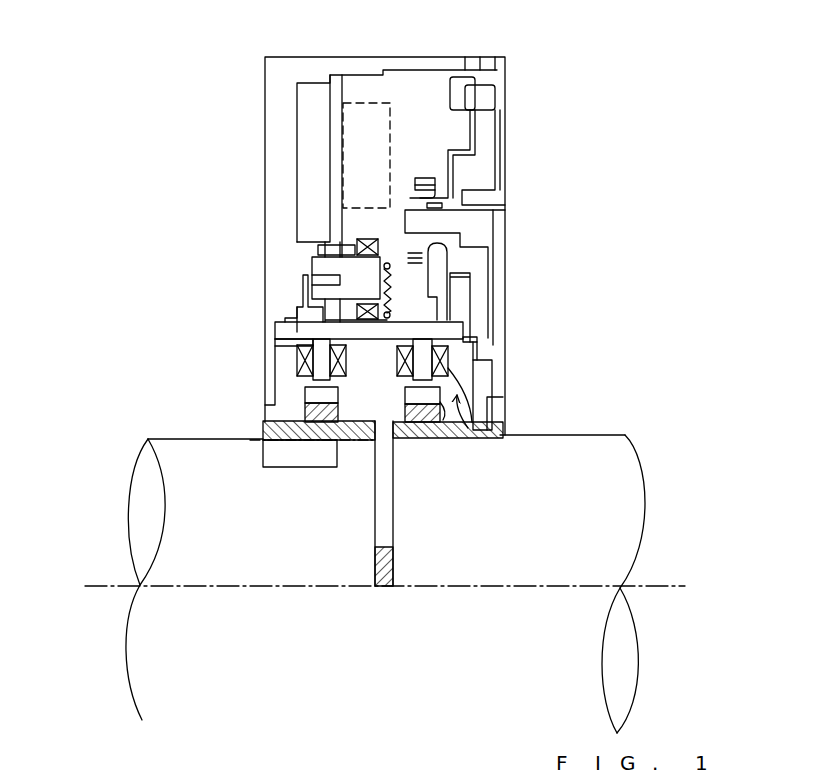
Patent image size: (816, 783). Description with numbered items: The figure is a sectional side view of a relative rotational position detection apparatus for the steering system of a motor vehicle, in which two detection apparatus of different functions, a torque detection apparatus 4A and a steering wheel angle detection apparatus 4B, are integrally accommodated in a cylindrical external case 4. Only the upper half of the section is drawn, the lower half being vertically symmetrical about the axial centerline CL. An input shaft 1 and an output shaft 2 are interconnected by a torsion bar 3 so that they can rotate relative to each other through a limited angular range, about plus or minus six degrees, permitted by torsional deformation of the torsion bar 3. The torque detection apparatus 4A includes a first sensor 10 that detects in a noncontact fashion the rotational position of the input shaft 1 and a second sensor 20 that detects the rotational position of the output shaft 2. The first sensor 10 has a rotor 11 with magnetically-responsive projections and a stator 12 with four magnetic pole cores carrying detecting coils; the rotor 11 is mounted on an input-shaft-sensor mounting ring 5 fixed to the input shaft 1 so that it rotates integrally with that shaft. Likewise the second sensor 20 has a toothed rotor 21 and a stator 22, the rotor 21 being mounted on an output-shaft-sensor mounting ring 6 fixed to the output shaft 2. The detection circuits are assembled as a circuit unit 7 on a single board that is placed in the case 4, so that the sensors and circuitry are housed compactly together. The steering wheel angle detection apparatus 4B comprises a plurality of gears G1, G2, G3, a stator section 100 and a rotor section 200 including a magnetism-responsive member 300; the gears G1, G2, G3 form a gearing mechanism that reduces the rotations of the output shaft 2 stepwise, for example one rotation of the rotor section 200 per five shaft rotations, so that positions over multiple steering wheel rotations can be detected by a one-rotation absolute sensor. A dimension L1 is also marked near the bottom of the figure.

The input shaft 1 is at (178, 497).
The output shaft 2 is at (622, 478).
The torsion bar 3 is at (382, 590).
The external case 4 is at (261, 48).
The torque detection apparatus 4A is at (250, 372).
The steering wheel angle detection apparatus 4B is at (284, 206).
The input-shaft-sensor mounting ring 5 is at (350, 445).
The output-shaft-sensor mounting ring 6 is at (436, 440).
The circuit unit 7 is at (361, 128).
The first sensor 10 is at (290, 404).
The rotor 11 is at (340, 396).
The stator 12 is at (348, 366).
The second sensor 20 is at (463, 395).
The rotor 21 is at (438, 422).
The stator 22 is at (473, 410).
The stator section 100 is at (340, 267).
The rotor section 200 is at (396, 270).
The magnetism-responsive member 300 is at (390, 270).
The gear G1 is at (478, 370).
The gear G2 is at (482, 302).
The gear G3 is at (422, 286).
The axial centerline CL is at (480, 590).
The length L1 is at (340, 782).